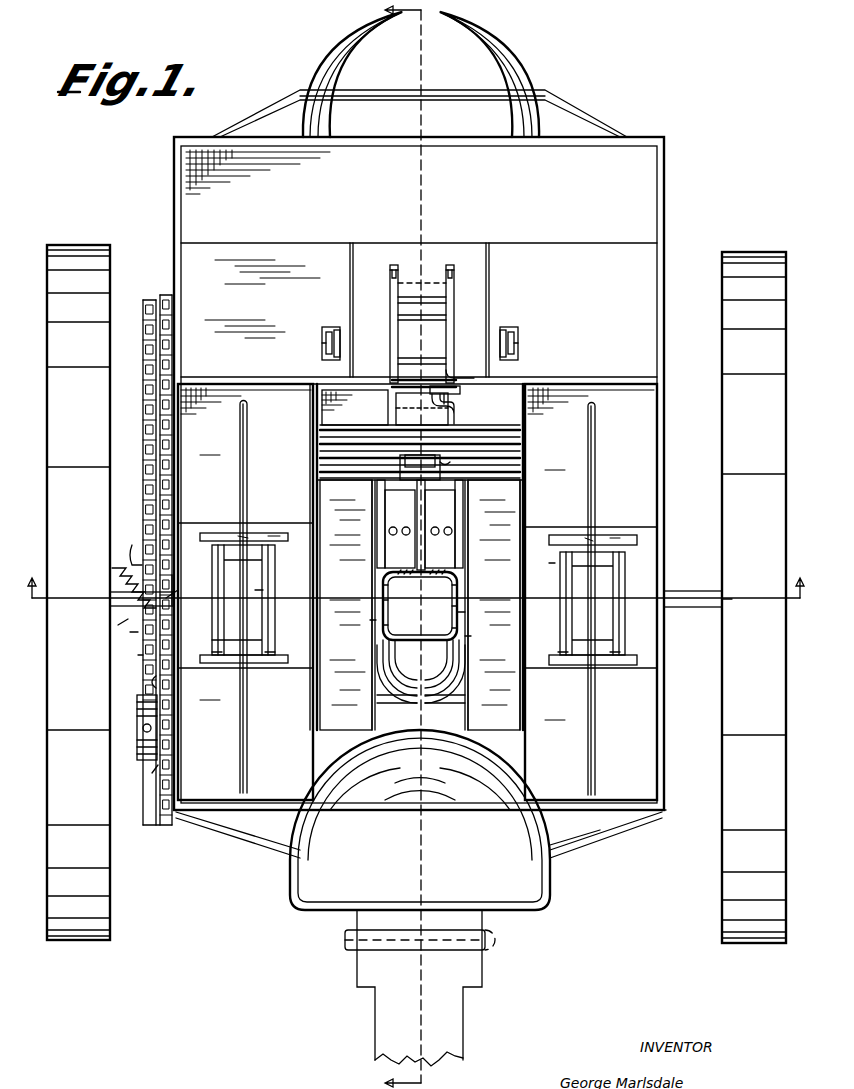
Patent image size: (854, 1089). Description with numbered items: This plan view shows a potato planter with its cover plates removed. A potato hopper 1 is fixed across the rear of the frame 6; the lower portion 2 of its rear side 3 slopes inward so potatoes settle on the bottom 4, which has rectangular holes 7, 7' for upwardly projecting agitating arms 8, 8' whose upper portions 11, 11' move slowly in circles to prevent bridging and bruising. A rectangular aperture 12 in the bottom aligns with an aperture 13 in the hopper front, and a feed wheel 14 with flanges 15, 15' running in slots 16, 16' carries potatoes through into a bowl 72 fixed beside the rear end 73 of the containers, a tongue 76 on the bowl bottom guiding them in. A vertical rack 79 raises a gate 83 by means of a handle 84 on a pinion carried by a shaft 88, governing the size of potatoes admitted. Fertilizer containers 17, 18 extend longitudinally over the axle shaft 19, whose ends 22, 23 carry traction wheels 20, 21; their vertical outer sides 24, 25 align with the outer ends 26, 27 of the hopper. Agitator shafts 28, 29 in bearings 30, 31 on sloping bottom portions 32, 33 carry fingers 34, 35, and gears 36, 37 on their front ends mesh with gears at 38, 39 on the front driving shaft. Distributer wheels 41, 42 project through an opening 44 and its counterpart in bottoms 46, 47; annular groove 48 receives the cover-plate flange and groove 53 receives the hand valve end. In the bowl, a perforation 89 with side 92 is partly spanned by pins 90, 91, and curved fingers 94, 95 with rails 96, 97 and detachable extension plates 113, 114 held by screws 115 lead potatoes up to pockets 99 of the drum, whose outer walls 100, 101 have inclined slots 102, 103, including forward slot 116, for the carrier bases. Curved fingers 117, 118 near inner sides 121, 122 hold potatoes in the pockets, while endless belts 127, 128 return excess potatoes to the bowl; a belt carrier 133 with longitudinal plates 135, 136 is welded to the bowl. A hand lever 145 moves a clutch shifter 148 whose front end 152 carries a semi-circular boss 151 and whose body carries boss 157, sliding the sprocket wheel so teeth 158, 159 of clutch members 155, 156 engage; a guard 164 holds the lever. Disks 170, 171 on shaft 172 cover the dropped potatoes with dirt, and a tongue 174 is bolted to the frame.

The potato hopper 1 is at (670, 189).
The lower portion of rear side 2 is at (686, 160).
The rear side 3 is at (640, 132).
The bottom 4 is at (411, 297).
The frame 6 is at (660, 815).
The rectangular hole 7 is at (340, 340).
The rectangular hole 7' is at (526, 334).
The agitating arm 8 is at (315, 330).
The agitating arm 8' is at (502, 331).
The upper portion 11 is at (302, 347).
The upper portion 11' is at (538, 347).
The rectangular aperture 12 is at (427, 293).
The aperture 13 is at (457, 374).
The feed wheel 14 is at (444, 310).
The flange 15 is at (375, 261).
The flange 15' is at (461, 256).
The slot 16 is at (402, 260).
The slot 16' is at (473, 266).
The fertilizer container 17 is at (310, 492).
The fertilizer container 18 is at (526, 450).
The axle shaft 19 is at (678, 589).
The traction wheel 20 is at (64, 244).
The traction wheel 21 is at (740, 251).
The end of axle shaft 22 is at (48, 606).
The end of axle shaft 23 is at (796, 600).
The vertical outer side 24 is at (178, 442).
The vertical outer side 25 is at (658, 450).
The vertical outer end 26 is at (179, 160).
The vertical outer end 27 is at (664, 266).
The longitudinal agitator shaft 28 is at (247, 430).
The longitudinal agitator shaft 29 is at (596, 488).
The bearing 30 is at (240, 408).
The bearing 31 is at (588, 410).
The downwardly sloping bottom portion 32 is at (234, 594).
The downwardly sloping bottom portion 33 is at (559, 601).
The fingers 34 is at (260, 533).
The fingers 35 is at (614, 534).
The left brace 36 is at (234, 824).
The right brace 37 is at (582, 810).
The gear 38 is at (284, 808).
The gear 39 is at (602, 812).
The fertilizer distributer wheel 41 is at (268, 566).
The fertilizer distributer wheel 42 is at (610, 574).
The opening 44 is at (212, 640).
The bottom 46 is at (172, 586).
The bottom 47 is at (544, 563).
The annular groove 48 is at (417, 651).
The annular groove 53 is at (265, 590).
The bowl 72 is at (355, 407).
The rear end 73 is at (302, 398).
The tongue 76 is at (422, 409).
The vertical rack 79 is at (392, 380).
The gate 83 is at (460, 388).
The handle 84 is at (466, 412).
The shaft 88 is at (465, 393).
The perforation 89 is at (418, 457).
The pin 90 is at (400, 466).
The pin 91 is at (452, 460).
The side of perforation 92 is at (417, 516).
The finger 94 is at (391, 524).
The finger 95 is at (446, 524).
The curved rail 96 is at (376, 528).
The curved rail 97 is at (466, 526).
The pocket 99 is at (420, 605).
The outer wall 100 is at (382, 586).
The outer wall 101 is at (456, 607).
The inclined slot 102 is at (382, 599).
The inclined slot 103 is at (458, 586).
The extension plate 113 is at (400, 529).
The extension plate 114 is at (440, 529).
The screws 115 is at (421, 522).
The forward slot 116 is at (492, 607).
The finger 117 is at (397, 671).
The finger 118 is at (445, 671).
The inner side 121 is at (300, 752).
The inner side 122 is at (522, 766).
The endless belt 127 is at (353, 634).
The endless belt 128 is at (494, 605).
The belt carrier 133 is at (485, 646).
The longitudinal plate 135 is at (382, 626).
The longitudinal plate 136 is at (458, 628).
The hand lever 145 is at (137, 726).
The clutch shifter 148 is at (156, 768).
The semi-circular boss 151 is at (132, 558).
The front end 152 is at (142, 534).
The clutch member 155 is at (140, 652).
The clutch member 156 is at (114, 624).
The semi-circular boss 157 is at (150, 680).
The teeth 158 is at (123, 632).
The teeth 159 is at (114, 572).
The guard 164 is at (168, 574).
The disk 170 is at (352, 46).
The disk 171 is at (488, 38).
The shaft 172 is at (558, 98).
The tongue 174 is at (474, 998).